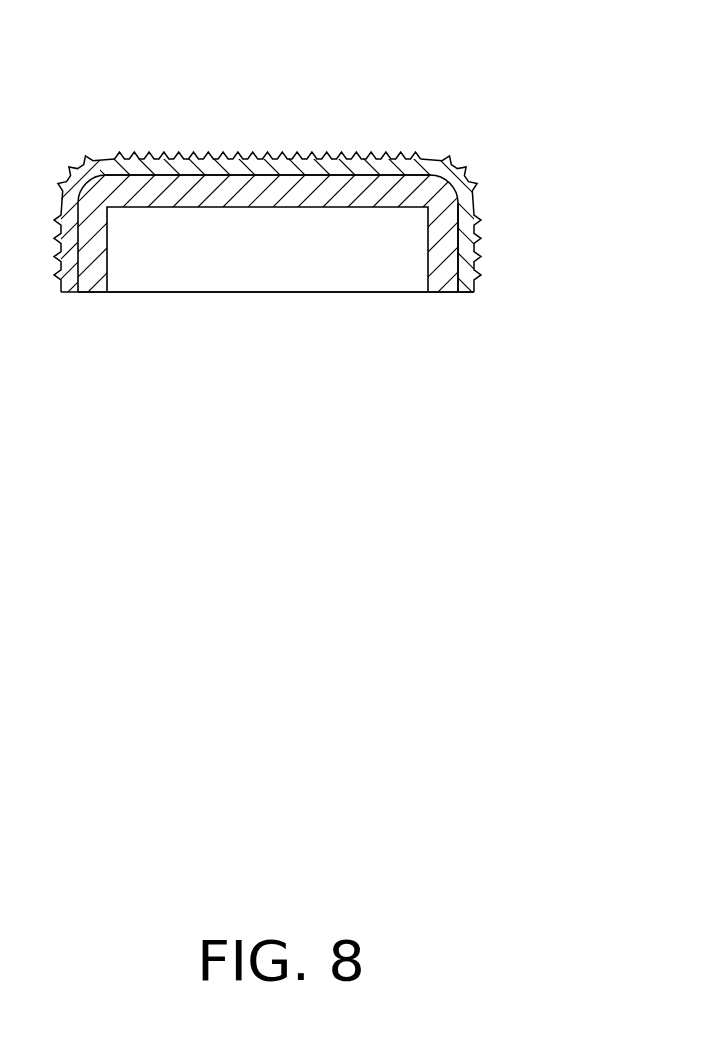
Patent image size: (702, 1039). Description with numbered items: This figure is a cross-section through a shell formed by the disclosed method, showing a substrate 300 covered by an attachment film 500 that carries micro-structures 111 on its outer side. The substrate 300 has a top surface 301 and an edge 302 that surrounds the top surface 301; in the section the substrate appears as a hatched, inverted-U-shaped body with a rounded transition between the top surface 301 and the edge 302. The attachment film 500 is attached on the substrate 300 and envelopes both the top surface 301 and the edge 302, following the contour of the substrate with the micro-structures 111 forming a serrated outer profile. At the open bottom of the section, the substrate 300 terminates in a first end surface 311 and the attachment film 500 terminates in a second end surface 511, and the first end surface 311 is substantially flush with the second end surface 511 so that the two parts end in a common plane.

The micro-structures 111 is at (128, 160).
The substrate 300 is at (227, 193).
The top surface 301 is at (222, 165).
The edge 302 is at (471, 256).
The first end surface 311 is at (439, 304).
The attachment film 500 is at (351, 216).
The second end surface 511 is at (470, 304).